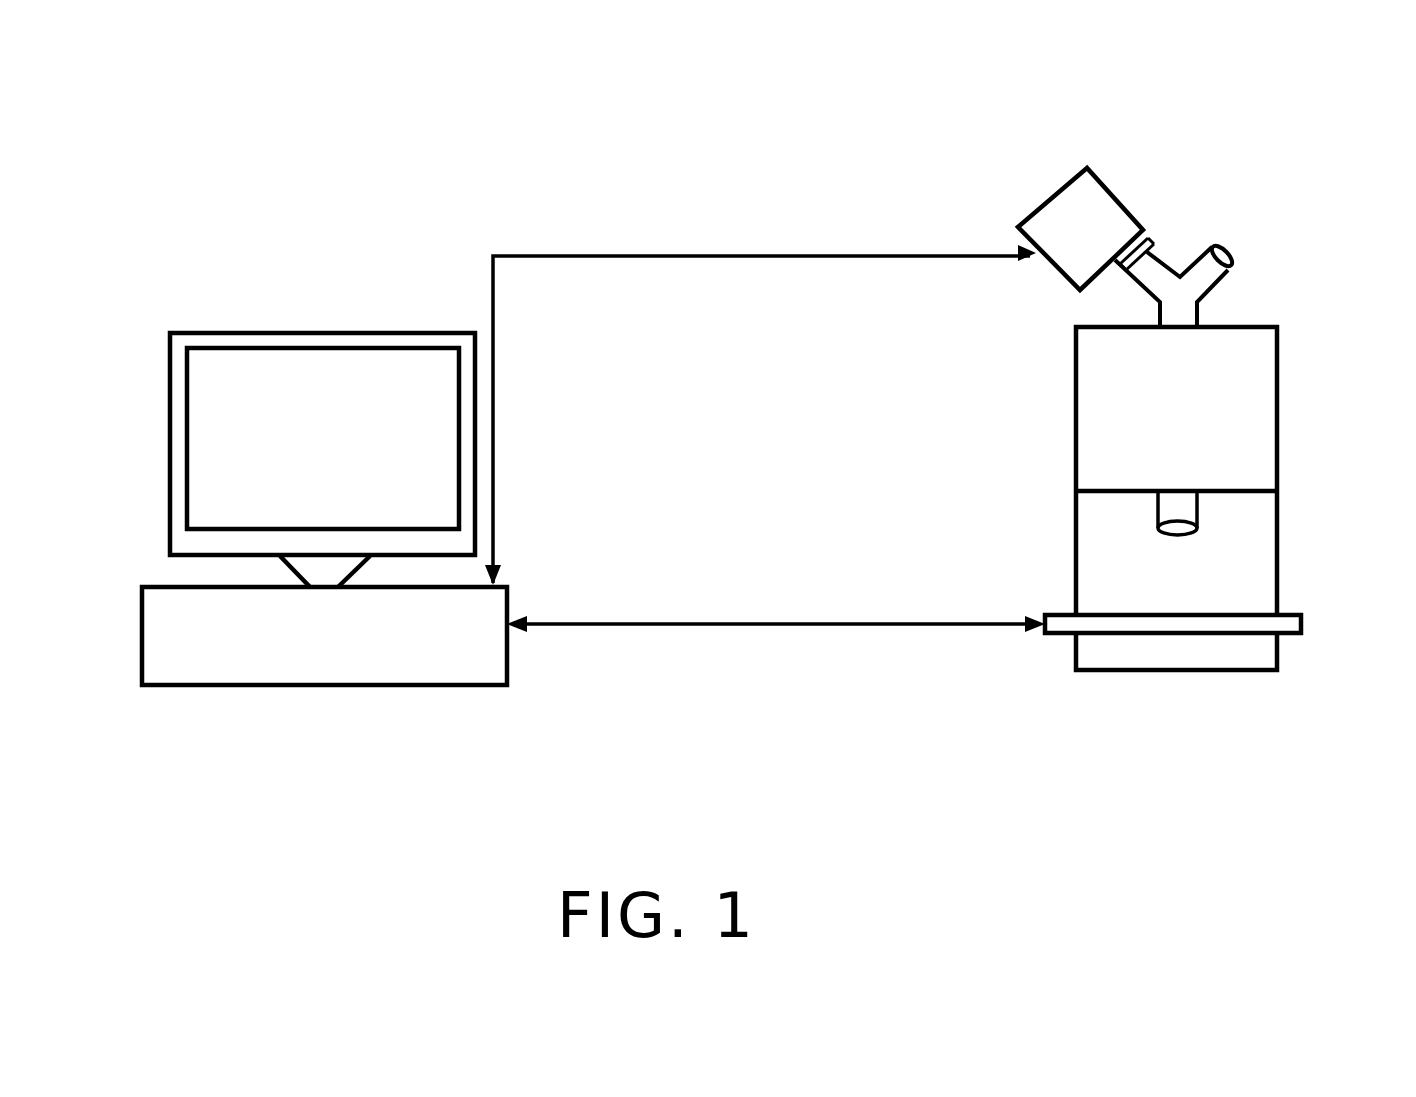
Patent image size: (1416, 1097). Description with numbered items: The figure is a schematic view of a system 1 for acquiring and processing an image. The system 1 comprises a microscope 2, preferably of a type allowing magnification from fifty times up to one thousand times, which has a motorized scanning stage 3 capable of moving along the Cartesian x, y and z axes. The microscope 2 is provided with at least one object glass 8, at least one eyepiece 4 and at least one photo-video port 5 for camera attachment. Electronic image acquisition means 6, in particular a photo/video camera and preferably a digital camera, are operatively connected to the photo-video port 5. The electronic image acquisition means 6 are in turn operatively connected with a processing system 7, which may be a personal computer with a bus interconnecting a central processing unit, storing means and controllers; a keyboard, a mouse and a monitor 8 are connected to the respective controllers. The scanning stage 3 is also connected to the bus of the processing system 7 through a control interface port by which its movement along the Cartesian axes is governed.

The system for acquiring and processing an image 1 is at (183, 143).
The microscope 2 is at (1278, 412).
The motorized scanning stage 3 is at (1303, 618).
The eyepiece 4 is at (1233, 255).
The photo-video port 5 is at (1152, 243).
The electronic image acquisition means 6 is at (1065, 180).
The processing system 7 is at (140, 655).
The object glass / monitor 8 is at (168, 405).